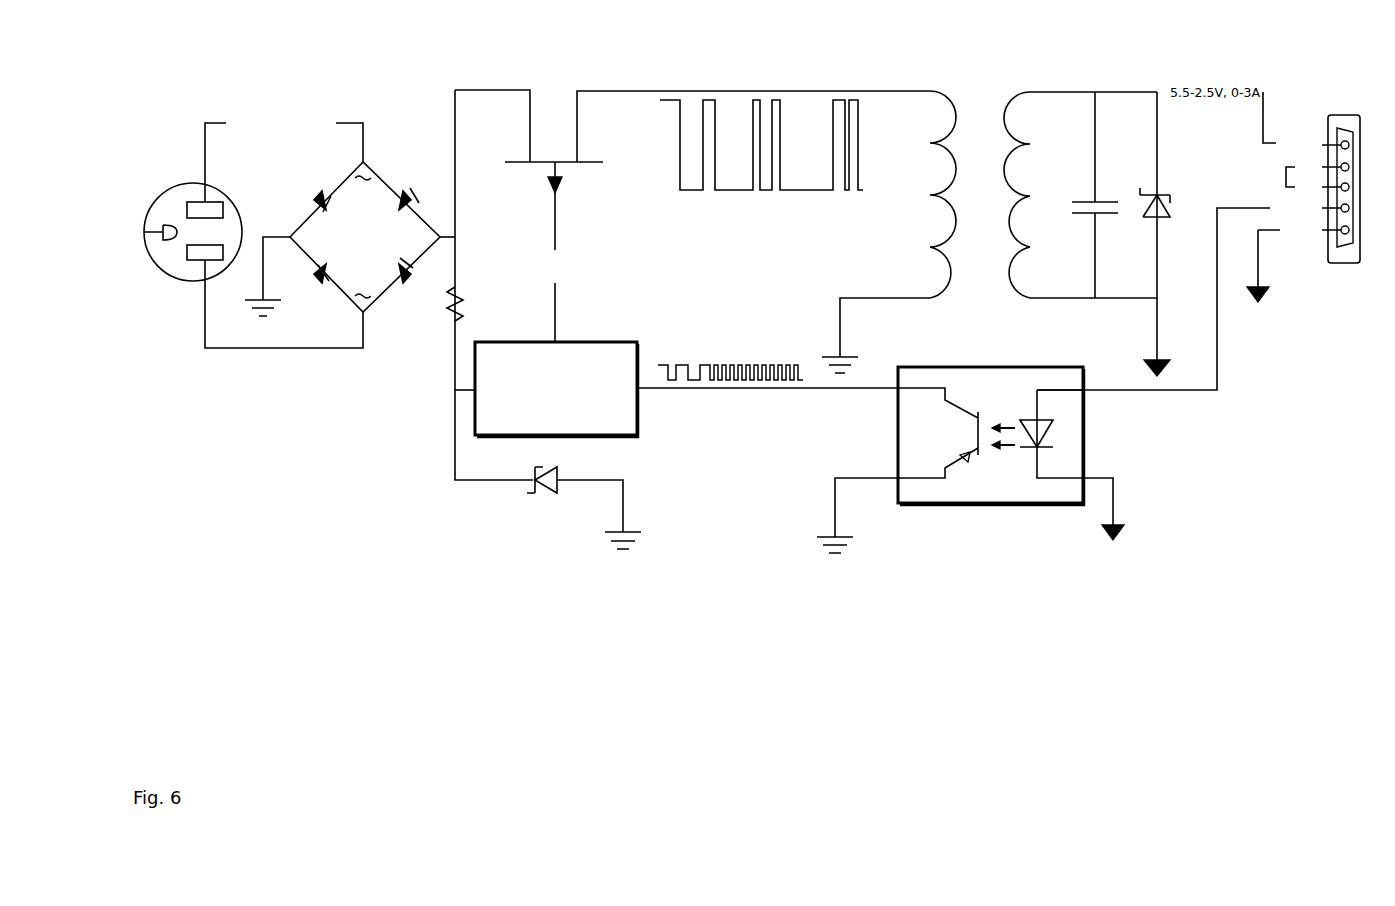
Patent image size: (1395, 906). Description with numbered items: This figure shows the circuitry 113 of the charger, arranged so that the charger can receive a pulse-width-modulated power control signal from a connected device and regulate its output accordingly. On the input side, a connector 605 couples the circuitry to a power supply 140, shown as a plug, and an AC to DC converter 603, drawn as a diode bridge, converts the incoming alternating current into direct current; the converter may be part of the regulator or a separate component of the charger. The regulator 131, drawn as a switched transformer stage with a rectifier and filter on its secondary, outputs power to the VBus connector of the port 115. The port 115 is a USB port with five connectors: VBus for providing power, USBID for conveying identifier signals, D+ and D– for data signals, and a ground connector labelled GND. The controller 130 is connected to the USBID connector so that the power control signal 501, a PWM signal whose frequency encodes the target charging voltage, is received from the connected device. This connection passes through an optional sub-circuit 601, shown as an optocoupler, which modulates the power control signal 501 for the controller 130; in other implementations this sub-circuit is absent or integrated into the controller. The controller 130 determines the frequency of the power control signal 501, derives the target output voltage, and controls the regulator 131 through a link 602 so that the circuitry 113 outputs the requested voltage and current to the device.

The power supply 140 is at (176, 218).
The connector 605 is at (236, 208).
The AC to DC converter 603 is at (381, 250).
The link 602 is at (575, 280).
The controller 130 is at (576, 426).
The regulator 131 is at (759, 275).
The power control signal 501 is at (725, 362).
The sub-circuit 601 is at (1012, 496).
The circuitry 113 is at (402, 508).
The port 115 is at (1344, 118).